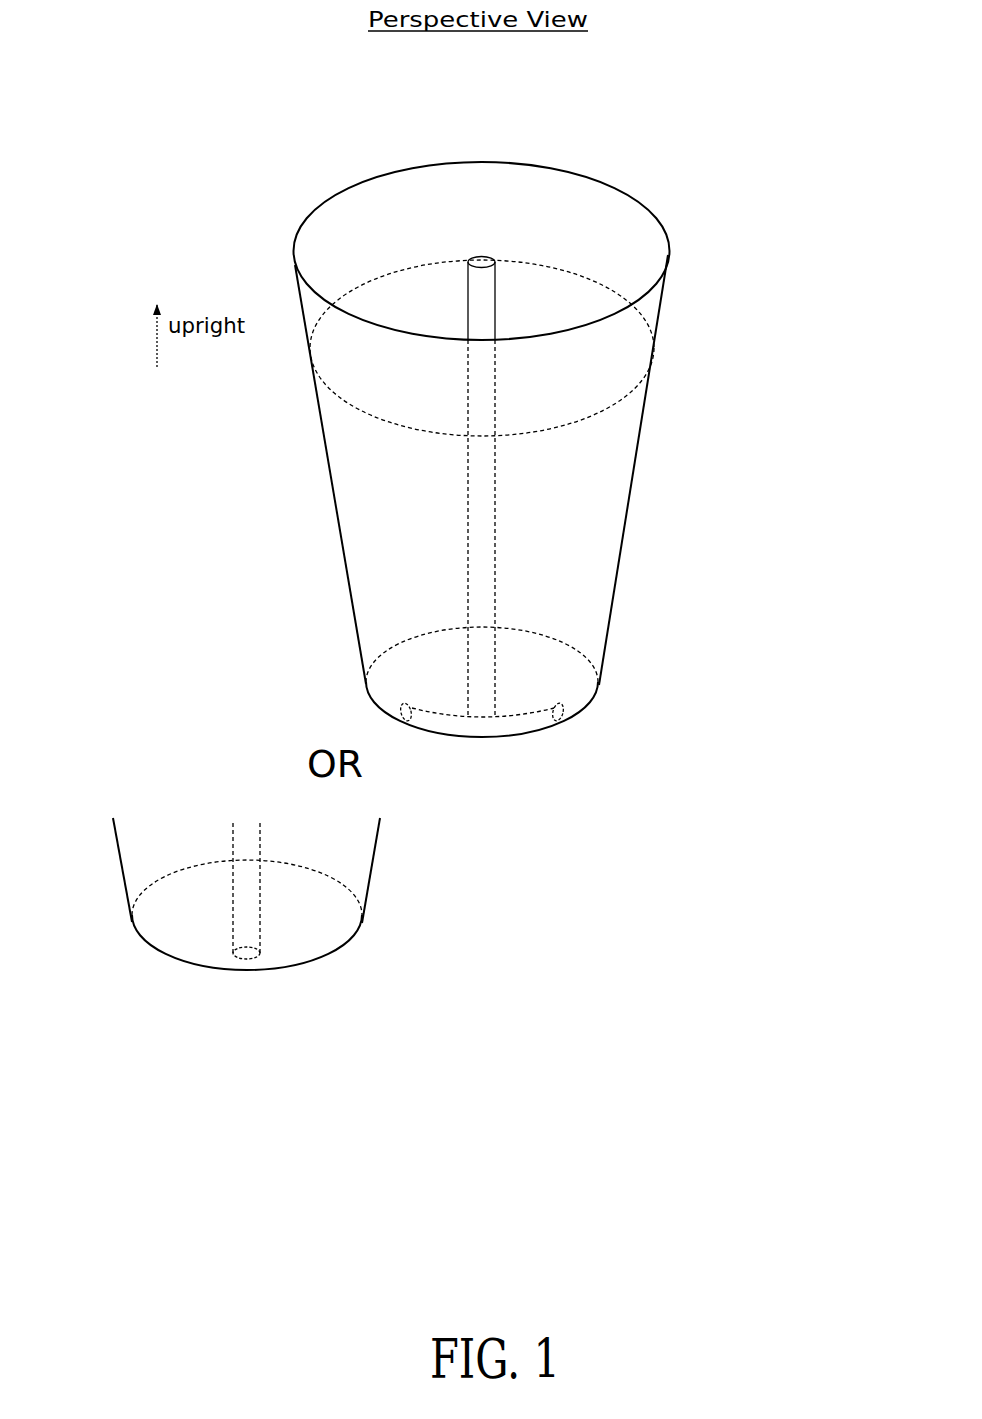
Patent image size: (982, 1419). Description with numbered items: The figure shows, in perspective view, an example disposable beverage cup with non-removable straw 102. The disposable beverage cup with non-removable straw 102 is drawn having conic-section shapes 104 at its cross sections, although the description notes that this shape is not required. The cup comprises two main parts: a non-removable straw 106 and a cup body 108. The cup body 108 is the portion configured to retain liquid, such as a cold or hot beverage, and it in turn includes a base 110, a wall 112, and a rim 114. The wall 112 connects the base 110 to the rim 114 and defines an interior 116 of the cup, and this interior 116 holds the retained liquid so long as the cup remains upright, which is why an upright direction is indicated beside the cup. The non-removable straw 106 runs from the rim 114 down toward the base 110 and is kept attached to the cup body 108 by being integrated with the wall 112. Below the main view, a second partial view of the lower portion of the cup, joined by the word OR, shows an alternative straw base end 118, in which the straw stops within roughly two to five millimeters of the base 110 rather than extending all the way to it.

The disposable beverage cup with non-removable straw 102 is at (785, 164).
The conic-section shapes 104 is at (352, 178).
The non-removable straw 106 is at (495, 393).
The cup body 108 is at (637, 532).
The base 110 is at (588, 705).
The wall 112 is at (340, 537).
The rim 114 is at (663, 218).
The interior 116 is at (347, 427).
The alternative straw base end 118 is at (268, 955).